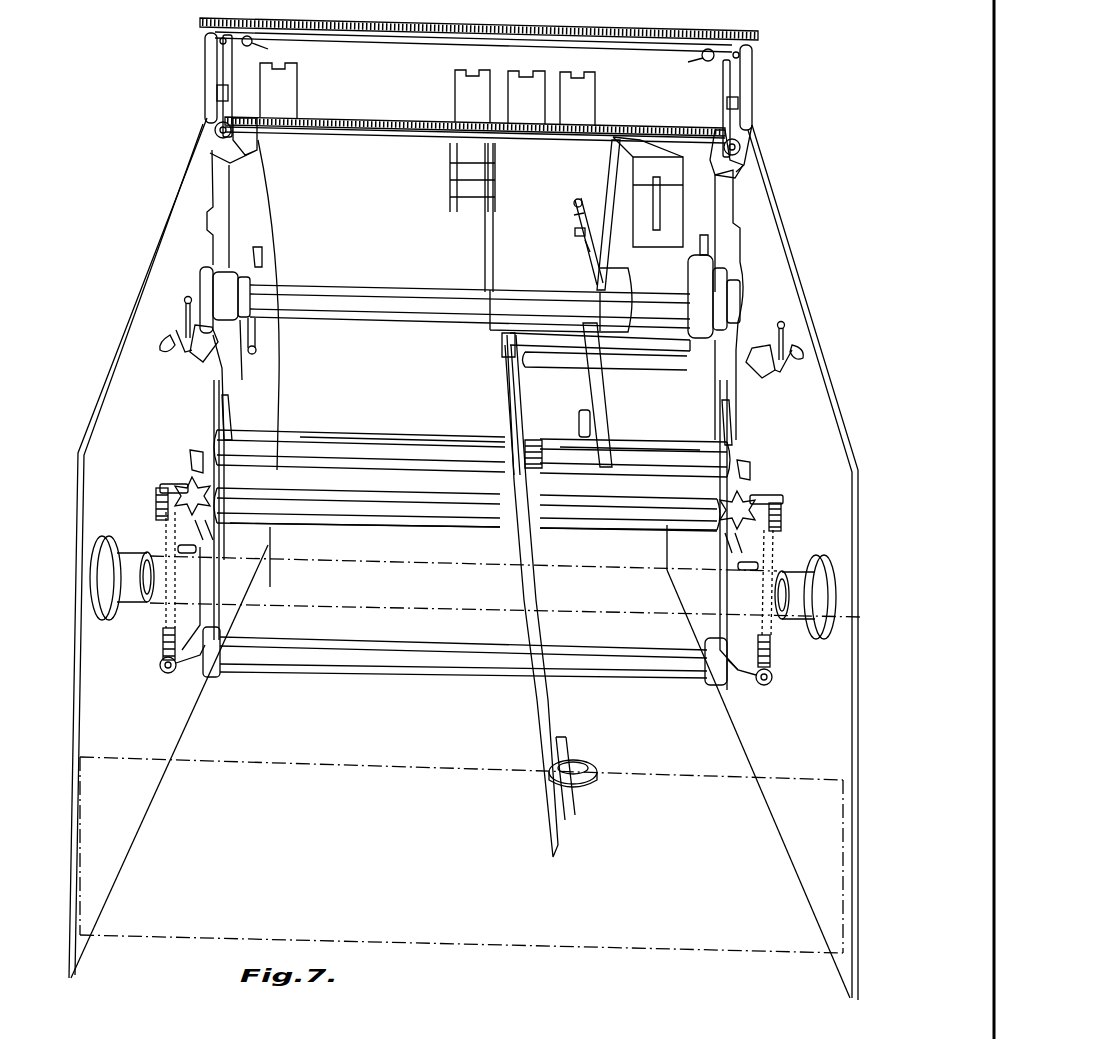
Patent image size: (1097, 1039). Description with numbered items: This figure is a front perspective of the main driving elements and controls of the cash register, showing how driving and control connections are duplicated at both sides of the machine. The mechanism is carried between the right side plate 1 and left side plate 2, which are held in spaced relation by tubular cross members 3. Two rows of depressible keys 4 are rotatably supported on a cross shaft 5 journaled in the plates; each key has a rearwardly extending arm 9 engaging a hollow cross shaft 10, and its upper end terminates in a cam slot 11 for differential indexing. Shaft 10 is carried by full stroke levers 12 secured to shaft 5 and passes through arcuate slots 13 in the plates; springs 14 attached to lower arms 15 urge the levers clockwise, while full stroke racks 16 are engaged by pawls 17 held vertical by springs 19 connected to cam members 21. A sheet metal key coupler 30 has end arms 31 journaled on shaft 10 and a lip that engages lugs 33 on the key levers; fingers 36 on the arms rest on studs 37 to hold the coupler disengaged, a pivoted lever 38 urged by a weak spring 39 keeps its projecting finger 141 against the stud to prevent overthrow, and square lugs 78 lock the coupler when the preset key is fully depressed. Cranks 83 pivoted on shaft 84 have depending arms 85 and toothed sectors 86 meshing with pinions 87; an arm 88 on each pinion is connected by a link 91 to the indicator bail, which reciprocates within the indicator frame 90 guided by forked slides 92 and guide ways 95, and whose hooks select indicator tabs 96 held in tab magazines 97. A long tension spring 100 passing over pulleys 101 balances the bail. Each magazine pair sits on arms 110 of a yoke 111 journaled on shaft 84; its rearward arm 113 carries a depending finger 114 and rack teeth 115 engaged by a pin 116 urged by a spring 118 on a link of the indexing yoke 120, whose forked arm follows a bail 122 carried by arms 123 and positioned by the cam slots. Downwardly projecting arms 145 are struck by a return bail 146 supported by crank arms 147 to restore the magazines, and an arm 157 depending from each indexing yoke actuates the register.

The right side plate 1 is at (815, 372).
The left side plate 2 is at (133, 342).
The tubular cross members 3 is at (136, 562).
The depressible keys 4 is at (548, 798).
The cross shaft 5 is at (338, 646).
The key arm 9 is at (506, 396).
The hollow cross shaft 10 is at (492, 526).
The cam slot 11 is at (504, 352).
The full stroke levers 12 is at (210, 578).
The arcuate slots 13 is at (190, 460).
The springs 14 is at (163, 641).
The lower arms 15 is at (185, 666).
The full stroke racks 16 is at (198, 360).
The pawl 17 is at (184, 352).
The springs 19 is at (187, 300).
The cam members 21 is at (172, 336).
The key coupler 30 is at (338, 462).
The end arms 31 is at (222, 506).
The lugs 33 is at (528, 445).
The fingers 36 is at (172, 505).
The studs 37 is at (165, 485).
The pivoted lever 38 is at (212, 484).
The spring 39 is at (210, 532).
The square lugs 78 is at (198, 549).
The cranks 83 is at (222, 222).
The shaft 84 is at (418, 292).
The depending arms 85 is at (258, 342).
The toothed sectors 86 is at (240, 160).
The pinions 87 is at (215, 131).
The arm 88 is at (222, 100).
The indicator frame 90 is at (606, 32).
The link 91 is at (230, 64).
The forked slides 92 is at (234, 81).
The guide ways 95 is at (219, 43).
The indicator tabs 96 is at (670, 236).
The tab magazines 97 is at (488, 160).
The tension spring 100 is at (397, 43).
The pulleys 101 is at (260, 47).
The arms 110 is at (487, 226).
The yoke 111 is at (521, 300).
The rearwardly extending arm 113 is at (570, 262).
The depending finger 114 is at (582, 246).
The rack teeth 115 is at (573, 222).
The pin 116 is at (574, 204).
The spring 118 is at (573, 236).
The indexing yoke 120 is at (622, 275).
The bail 122 is at (550, 358).
The arms 123 is at (665, 356).
The projecting finger 141 is at (255, 262).
The downwardly projecting arms 145 is at (606, 434).
The return bail 146 is at (431, 446).
The crank arm 147 is at (226, 407).
The arm 157 is at (579, 414).